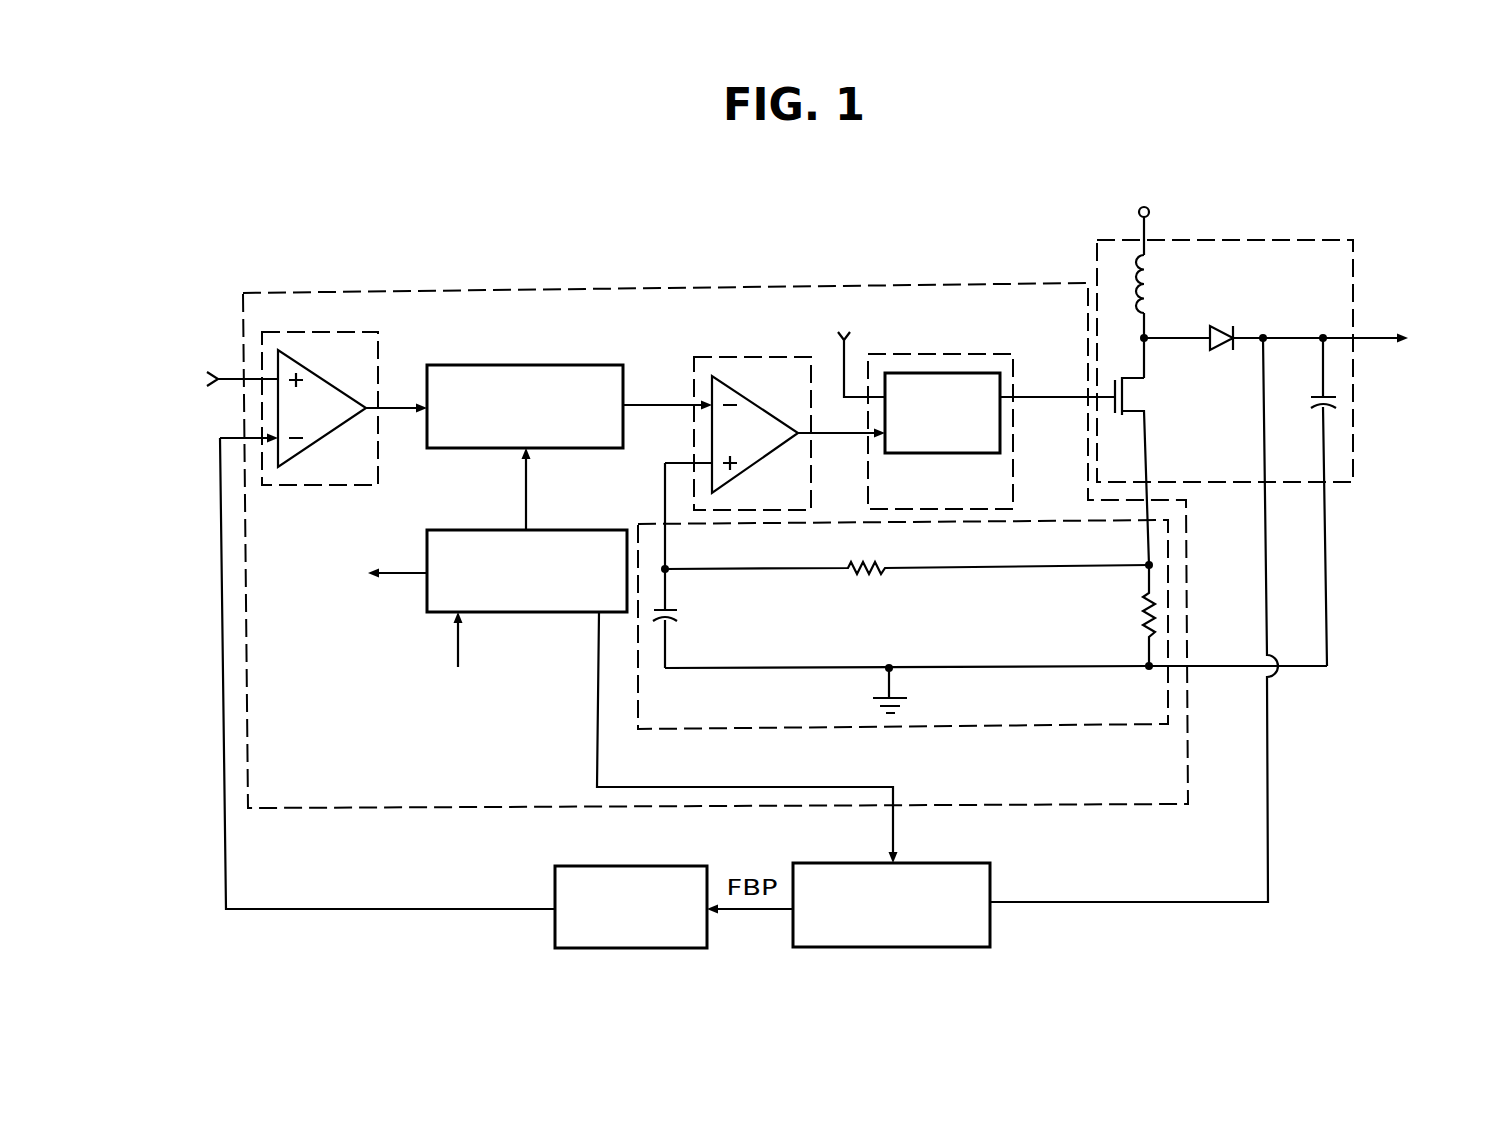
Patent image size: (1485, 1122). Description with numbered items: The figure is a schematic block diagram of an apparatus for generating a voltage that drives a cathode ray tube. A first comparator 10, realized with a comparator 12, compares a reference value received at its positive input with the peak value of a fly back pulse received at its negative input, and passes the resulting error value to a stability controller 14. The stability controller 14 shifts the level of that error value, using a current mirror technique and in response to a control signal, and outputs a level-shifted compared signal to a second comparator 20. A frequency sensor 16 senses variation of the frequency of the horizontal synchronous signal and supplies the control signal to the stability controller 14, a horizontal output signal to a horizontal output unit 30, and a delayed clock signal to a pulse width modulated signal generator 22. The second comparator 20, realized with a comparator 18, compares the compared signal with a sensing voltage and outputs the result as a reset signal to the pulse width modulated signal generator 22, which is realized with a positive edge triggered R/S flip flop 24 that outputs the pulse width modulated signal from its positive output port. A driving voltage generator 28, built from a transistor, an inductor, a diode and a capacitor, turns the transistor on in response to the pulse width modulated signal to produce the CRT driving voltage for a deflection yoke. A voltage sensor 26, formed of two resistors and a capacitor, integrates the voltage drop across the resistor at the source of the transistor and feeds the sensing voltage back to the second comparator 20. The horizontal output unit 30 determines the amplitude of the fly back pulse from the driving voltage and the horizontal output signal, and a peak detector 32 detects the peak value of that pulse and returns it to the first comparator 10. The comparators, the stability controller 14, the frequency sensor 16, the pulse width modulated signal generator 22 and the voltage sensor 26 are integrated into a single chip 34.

The first comparator 10 is at (320, 437).
The comparator 12 is at (323, 380).
The stability controller 14 is at (525, 365).
The frequency sensor 16 is at (493, 530).
The comparator 18 is at (757, 401).
The second comparator 20 is at (752, 404).
The pulse width modulated signal generator 22 is at (940, 403).
The R/S flip flop 24 is at (938, 453).
The voltage sensor 26 is at (1062, 729).
The driving voltage generator 28 is at (1252, 240).
The horizontal output unit 30 is at (921, 863).
The peak detector 32 is at (640, 866).
The single chip 34 is at (1093, 806).